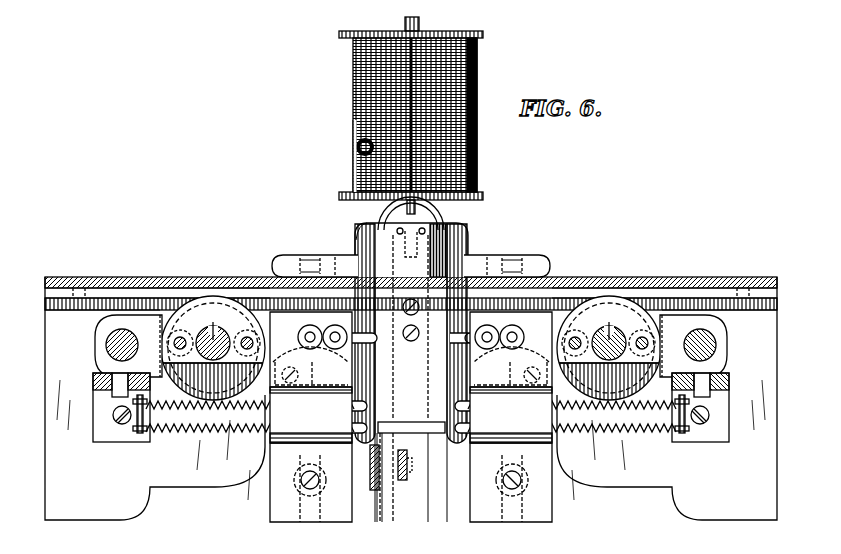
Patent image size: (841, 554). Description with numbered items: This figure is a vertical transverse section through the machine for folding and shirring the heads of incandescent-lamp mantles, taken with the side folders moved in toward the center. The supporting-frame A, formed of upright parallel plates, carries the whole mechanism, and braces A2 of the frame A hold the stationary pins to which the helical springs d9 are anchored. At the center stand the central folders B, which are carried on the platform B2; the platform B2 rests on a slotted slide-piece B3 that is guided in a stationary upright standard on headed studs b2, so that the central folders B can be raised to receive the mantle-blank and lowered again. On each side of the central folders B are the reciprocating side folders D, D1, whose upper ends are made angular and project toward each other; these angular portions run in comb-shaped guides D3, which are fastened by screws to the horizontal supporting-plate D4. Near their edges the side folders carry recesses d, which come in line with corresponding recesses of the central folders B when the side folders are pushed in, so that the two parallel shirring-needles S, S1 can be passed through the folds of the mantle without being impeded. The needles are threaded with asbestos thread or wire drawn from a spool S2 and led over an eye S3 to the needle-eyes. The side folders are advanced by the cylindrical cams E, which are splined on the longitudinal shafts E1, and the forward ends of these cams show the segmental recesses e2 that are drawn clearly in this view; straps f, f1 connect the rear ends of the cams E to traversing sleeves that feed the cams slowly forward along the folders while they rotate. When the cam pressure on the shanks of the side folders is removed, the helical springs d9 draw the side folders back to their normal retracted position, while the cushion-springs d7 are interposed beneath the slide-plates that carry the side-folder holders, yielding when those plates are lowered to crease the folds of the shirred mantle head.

The supporting-frame A is at (53, 413).
The braces A2 is at (732, 412).
The central folders B is at (410, 342).
The platform B2 is at (411, 432).
The slotted slide-piece B3 is at (395, 480).
The headed studs b2 is at (411, 460).
The side folders D is at (460, 243).
The side folders D1 is at (357, 242).
The comb-shaped guides D3 is at (553, 270).
The horizontal supporting-plate D4 is at (740, 285).
The cylindrical cams E is at (185, 305).
The longitudinal shafts E1 is at (215, 338).
The shirring-needles S is at (398, 228).
The solenoid terminal S1 is at (424, 228).
The spool S2 is at (477, 122).
The eye S3 is at (357, 148).
The recesses d is at (322, 322).
The cushion-springs d7 is at (707, 458).
The helical springs d9 is at (614, 432).
The segmental recesses e2 is at (411, 392).
The straps f is at (108, 322).
The hub f1 is at (707, 326).